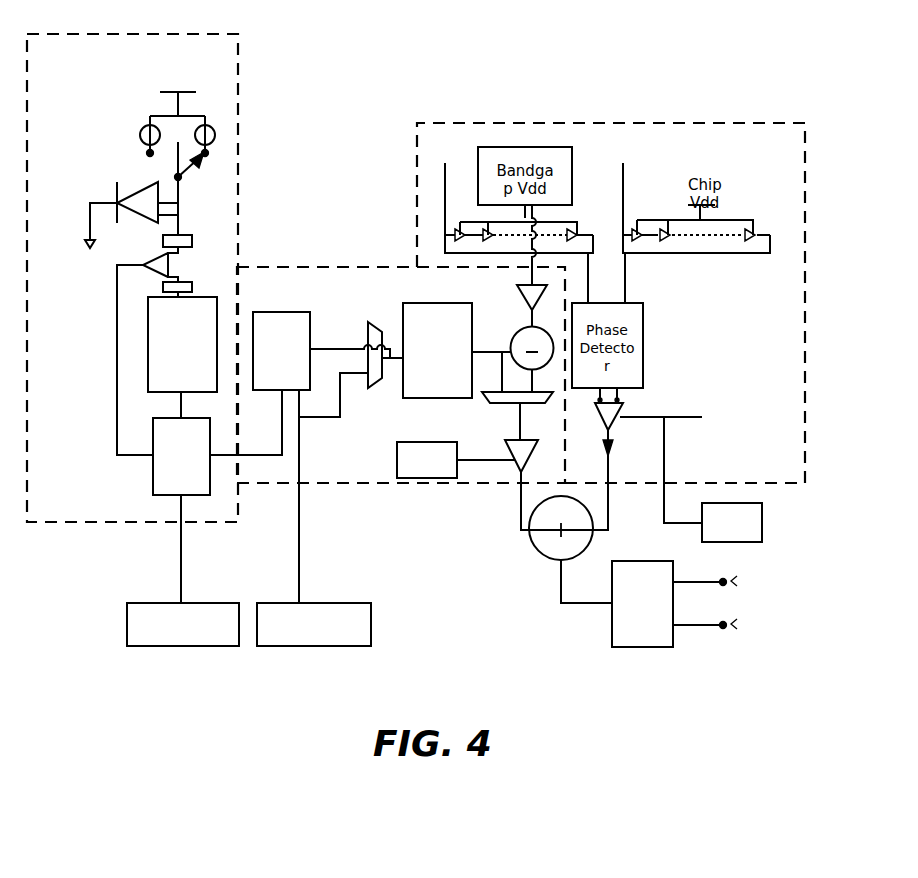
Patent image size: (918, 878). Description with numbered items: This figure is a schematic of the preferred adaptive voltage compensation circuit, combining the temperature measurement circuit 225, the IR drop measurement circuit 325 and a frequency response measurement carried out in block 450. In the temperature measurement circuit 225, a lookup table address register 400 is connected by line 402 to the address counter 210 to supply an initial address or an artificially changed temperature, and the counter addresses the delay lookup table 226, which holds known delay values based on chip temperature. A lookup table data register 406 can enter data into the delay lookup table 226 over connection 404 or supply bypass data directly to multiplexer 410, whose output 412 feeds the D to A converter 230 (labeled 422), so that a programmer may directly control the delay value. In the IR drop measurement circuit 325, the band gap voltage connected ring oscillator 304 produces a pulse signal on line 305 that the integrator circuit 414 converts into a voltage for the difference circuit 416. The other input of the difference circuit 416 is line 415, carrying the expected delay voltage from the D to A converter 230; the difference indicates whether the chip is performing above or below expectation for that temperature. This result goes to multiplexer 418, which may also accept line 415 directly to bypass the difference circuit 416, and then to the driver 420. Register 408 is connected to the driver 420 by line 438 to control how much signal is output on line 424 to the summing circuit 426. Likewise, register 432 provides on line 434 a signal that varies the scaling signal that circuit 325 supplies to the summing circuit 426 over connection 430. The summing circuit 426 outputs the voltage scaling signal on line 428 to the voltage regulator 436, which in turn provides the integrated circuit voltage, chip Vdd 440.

The temperature measurement circuit 225 is at (132, 278).
The block 450 is at (401, 375).
The IR drop measurement circuit 325 is at (611, 303).
The band gap voltage connected ring oscillator 304 is at (445, 240).
The line 305 is at (530, 284).
The lookup table output line 412 is at (390, 290).
The integrator circuit 414 is at (516, 293).
The input line 415 is at (488, 352).
The difference circuit 416 is at (517, 333).
The multiplexer 418 is at (499, 405).
The driver 420 is at (530, 441).
The D to A converter 422 is at (413, 400).
The multiplexer 410 is at (375, 388).
The register 408 is at (396, 449).
The line 438 is at (477, 461).
The line 424 is at (520, 512).
The summing circuit 426 is at (538, 553).
The line 428 is at (560, 595).
The adder second input 430 is at (610, 515).
The register 432 is at (765, 514).
The line 434 is at (678, 525).
The voltage regulator 436 is at (642, 604).
The integrated circuit voltage (chip Vdd) 440 is at (733, 581).
The lookup table address register 400 is at (123, 637).
The line 402 is at (178, 573).
The data line 404 is at (300, 575).
The lookup table data register 406 is at (373, 640).
The delay lookup table 226 is at (281, 351).
The D to A converter 230 is at (182, 344).
The address counter 210 is at (181, 456).